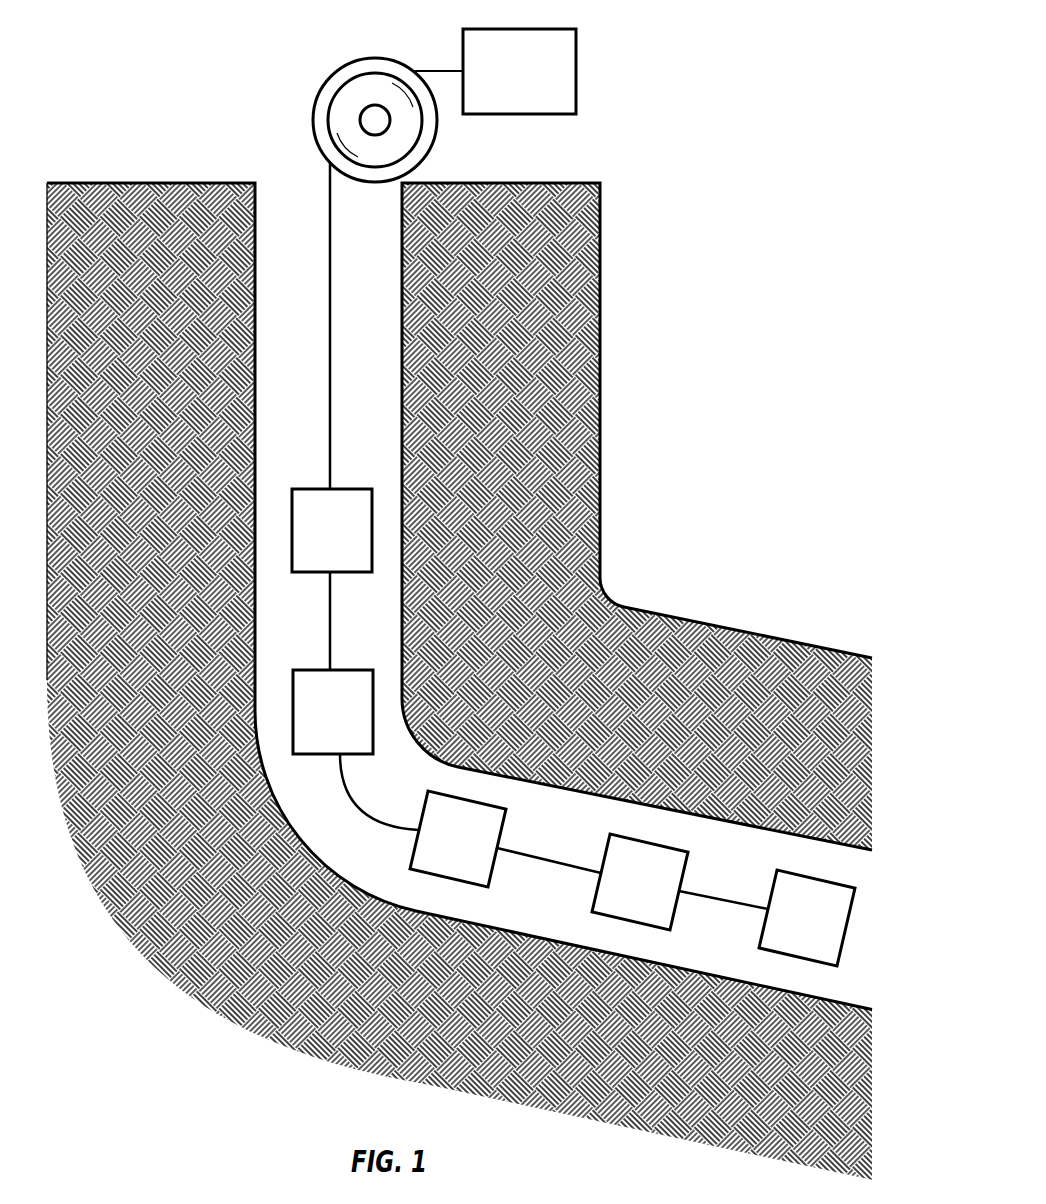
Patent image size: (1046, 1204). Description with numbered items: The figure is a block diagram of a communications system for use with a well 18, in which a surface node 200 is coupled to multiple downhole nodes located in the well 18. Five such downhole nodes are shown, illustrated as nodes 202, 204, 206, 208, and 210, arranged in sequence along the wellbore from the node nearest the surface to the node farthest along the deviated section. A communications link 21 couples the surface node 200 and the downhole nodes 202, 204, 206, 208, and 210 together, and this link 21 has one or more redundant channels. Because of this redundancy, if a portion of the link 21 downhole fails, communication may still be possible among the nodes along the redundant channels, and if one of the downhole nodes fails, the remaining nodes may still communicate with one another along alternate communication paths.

The well 18 is at (386, 441).
The communications link 21 is at (332, 307).
The surface node 200 is at (577, 63).
The node 202 is at (322, 489).
The node 204 is at (323, 670).
The node 206 is at (415, 840).
The node 208 is at (599, 883).
The node 210 is at (760, 933).